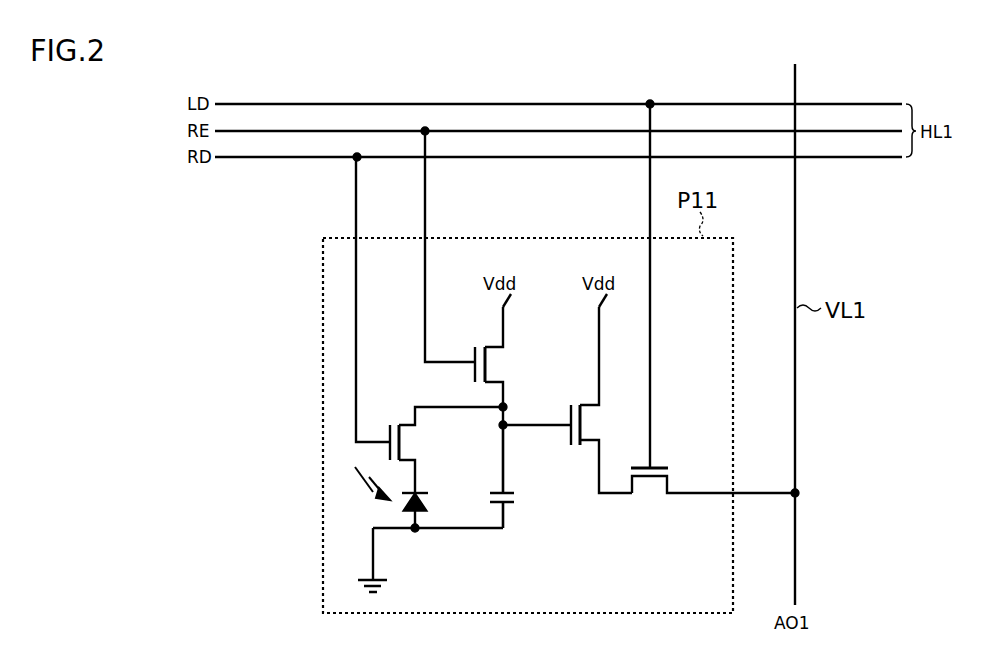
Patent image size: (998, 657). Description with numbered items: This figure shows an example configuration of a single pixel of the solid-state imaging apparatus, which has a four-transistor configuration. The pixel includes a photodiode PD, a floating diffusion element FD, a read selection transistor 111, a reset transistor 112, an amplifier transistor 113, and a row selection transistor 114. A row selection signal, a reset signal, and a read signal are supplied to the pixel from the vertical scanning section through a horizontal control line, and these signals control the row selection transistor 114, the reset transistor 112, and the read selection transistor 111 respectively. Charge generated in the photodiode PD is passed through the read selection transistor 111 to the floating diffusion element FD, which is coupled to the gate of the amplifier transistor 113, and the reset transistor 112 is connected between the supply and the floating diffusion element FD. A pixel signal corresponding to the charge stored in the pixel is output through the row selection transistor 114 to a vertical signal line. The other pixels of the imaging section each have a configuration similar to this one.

The read selection transistor 111 is at (390, 433).
The reset transistor 112 is at (502, 344).
The amplifier transistor 113 is at (588, 404).
The row selection transistor 114 is at (660, 467).
The photodiode PD is at (430, 500).
The floating diffusion element FD is at (511, 506).